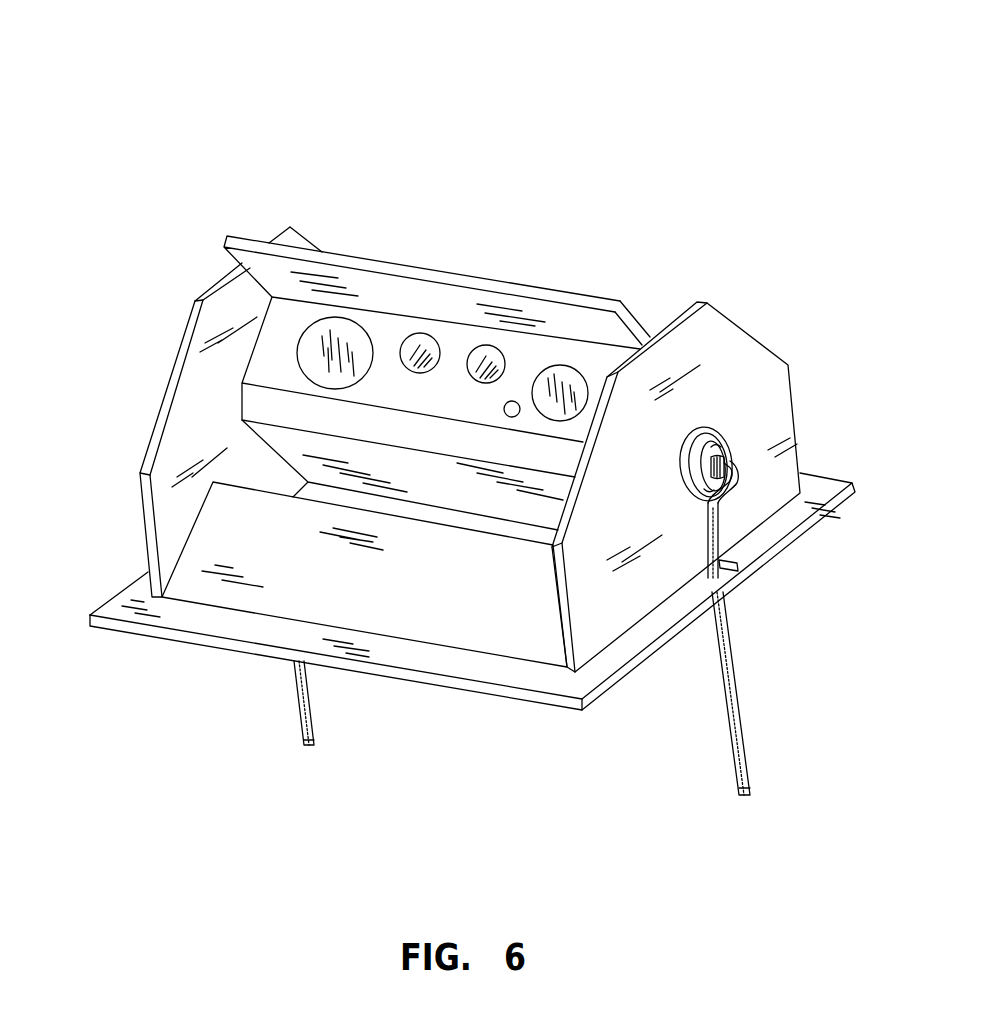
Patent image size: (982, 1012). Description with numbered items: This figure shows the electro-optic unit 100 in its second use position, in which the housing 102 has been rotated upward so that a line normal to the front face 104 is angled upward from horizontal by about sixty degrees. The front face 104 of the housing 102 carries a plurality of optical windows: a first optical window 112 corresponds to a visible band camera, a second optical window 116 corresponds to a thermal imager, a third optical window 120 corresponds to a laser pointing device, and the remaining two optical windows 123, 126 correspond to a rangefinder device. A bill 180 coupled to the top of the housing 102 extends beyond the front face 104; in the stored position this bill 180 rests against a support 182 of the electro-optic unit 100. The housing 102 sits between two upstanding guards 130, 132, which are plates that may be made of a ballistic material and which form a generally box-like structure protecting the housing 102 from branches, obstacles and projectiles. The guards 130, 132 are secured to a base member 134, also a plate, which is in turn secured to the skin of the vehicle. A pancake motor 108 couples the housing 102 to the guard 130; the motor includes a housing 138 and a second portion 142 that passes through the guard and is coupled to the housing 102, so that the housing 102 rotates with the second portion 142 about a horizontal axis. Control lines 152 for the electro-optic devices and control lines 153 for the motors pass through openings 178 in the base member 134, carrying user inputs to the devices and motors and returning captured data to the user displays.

The electro-optic unit 100 is at (568, 127).
The housing 102 is at (247, 418).
The front face 104 is at (466, 409).
The pancake motor 108 is at (723, 422).
The first optical window 112 is at (333, 328).
The second optical window 116 is at (582, 366).
The third optical window 120 is at (514, 400).
The optical window 123 is at (407, 335).
The optical window 126 is at (492, 345).
The upstanding guard 130 is at (721, 331).
The upstanding guard 132 is at (182, 381).
The base member 134 is at (110, 616).
The housing 138 is at (732, 452).
The second portion 142 is at (713, 467).
The control lines 152 is at (305, 725).
The control lines 153 is at (312, 716).
The openings 178 is at (742, 568).
The bill 180 is at (441, 276).
The support 182 is at (262, 592).